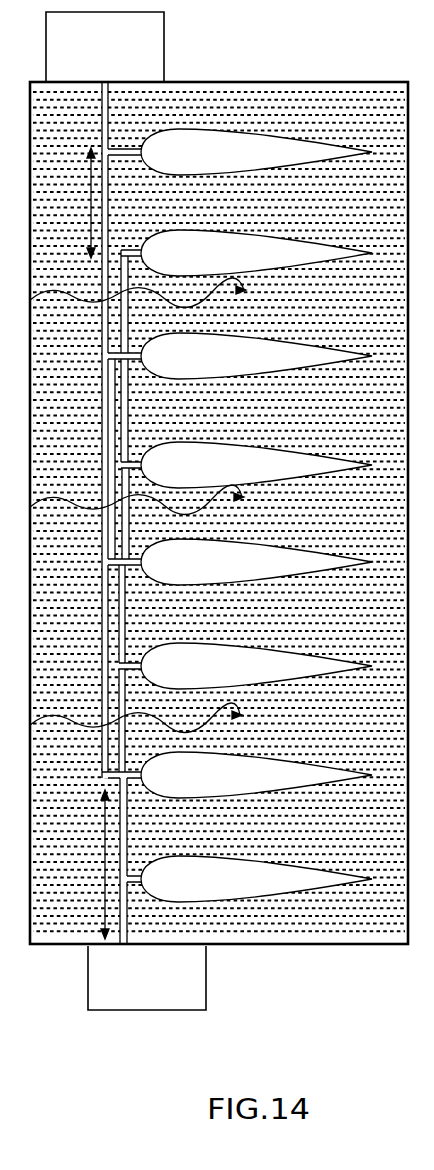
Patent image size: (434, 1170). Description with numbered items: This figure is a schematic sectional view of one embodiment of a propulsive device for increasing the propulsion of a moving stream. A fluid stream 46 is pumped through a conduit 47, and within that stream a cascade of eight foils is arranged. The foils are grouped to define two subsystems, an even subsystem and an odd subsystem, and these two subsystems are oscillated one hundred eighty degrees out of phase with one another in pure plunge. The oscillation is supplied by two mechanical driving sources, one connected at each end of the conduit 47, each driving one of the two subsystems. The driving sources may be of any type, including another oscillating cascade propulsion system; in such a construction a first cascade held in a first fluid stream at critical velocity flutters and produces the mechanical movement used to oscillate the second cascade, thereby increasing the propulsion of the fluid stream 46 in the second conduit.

The fluid stream 46 is at (78, 543).
The conduit 47 is at (275, 81).